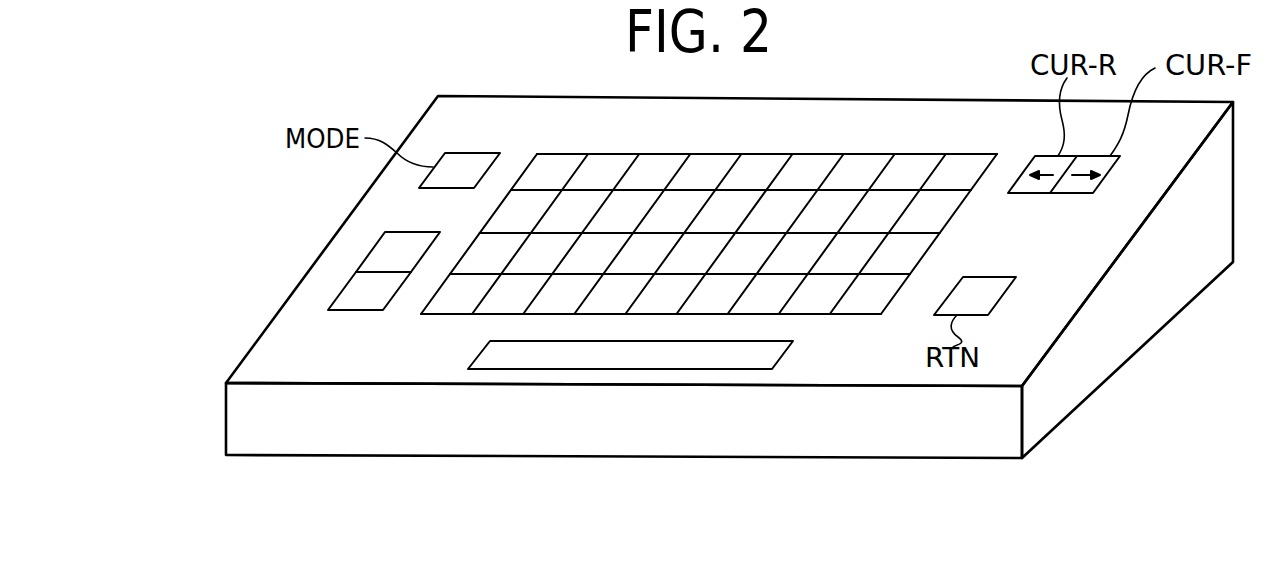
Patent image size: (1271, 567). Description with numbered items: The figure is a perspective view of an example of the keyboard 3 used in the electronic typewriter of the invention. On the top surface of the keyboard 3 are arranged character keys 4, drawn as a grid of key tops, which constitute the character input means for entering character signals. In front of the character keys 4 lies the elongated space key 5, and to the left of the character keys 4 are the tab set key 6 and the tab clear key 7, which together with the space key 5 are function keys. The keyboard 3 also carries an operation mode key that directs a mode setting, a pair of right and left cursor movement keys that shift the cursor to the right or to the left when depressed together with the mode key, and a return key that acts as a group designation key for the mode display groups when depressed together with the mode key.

The keyboard 3 is at (748, 458).
The character keys 4 is at (922, 156).
The space key 5 is at (562, 369).
The tab set key 6 is at (367, 252).
The tab clear key 7 is at (340, 291).